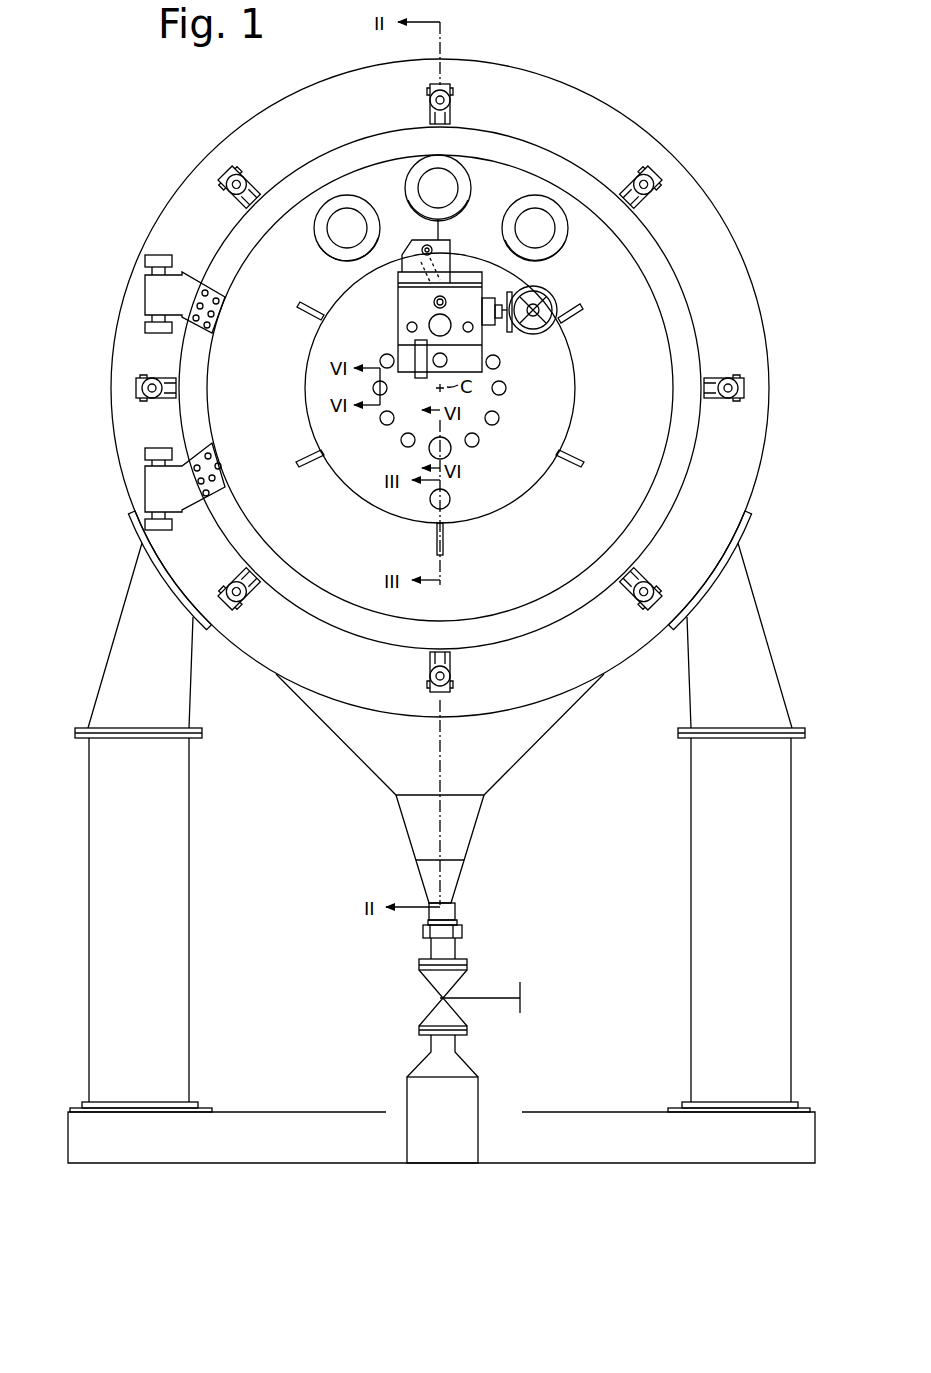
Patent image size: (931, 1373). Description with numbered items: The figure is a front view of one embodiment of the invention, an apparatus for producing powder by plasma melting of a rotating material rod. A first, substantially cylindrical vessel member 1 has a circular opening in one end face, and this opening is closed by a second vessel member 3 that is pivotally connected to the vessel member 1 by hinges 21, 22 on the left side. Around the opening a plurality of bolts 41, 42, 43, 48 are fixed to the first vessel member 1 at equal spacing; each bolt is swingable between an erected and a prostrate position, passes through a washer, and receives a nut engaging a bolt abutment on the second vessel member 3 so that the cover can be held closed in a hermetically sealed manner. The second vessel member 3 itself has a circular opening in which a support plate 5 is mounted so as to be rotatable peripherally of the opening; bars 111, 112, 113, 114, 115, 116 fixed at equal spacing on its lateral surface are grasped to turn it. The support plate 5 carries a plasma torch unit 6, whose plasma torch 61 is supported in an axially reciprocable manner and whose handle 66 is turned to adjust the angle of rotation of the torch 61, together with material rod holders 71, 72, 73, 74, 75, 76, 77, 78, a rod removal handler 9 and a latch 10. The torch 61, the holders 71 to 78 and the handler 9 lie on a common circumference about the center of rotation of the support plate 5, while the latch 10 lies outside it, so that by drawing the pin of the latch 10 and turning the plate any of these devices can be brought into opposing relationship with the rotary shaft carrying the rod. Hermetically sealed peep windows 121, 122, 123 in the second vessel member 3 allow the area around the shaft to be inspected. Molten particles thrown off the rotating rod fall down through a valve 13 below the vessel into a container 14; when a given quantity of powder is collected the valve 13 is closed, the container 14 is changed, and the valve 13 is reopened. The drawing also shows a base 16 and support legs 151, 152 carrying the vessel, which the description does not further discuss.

The first vessel member 1 is at (622, 130).
The second vessel member 3 is at (655, 352).
The support plate 5 is at (572, 416).
The plasma torch unit 6 is at (459, 277).
The rod removal handler 9 is at (455, 452).
The latch 10 is at (455, 502).
The valve 13 is at (474, 963).
The container 14 is at (480, 1093).
The base 16 is at (240, 1110).
The hinge 21 is at (196, 275).
The hinge 22 is at (183, 458).
The bolt 41 is at (730, 395).
The bolt 42 is at (652, 582).
The bolt 43 is at (450, 100).
The bolt 48 is at (650, 180).
The plasma torch 61 is at (452, 323).
The handle 66 is at (553, 297).
The material rod holder 71 is at (501, 362).
The material rod holder 72 is at (507, 388).
The material rod holder 73 is at (500, 418).
The material rod holder 74 is at (480, 440).
The material rod holder 75 is at (400, 441).
The material rod holder 76 is at (380, 420).
The material rod holder 77 is at (373, 388).
The material rod holder 78 is at (383, 355).
The bar 111 is at (580, 466).
The bar 112 is at (445, 540).
The bar 113 is at (300, 460).
The bar 114 is at (302, 316).
The bar 115 is at (430, 243).
The bar 116 is at (578, 314).
The peep window 121 is at (340, 235).
The peep window 122 is at (448, 190).
The peep window 123 is at (540, 230).
The leg 151 is at (106, 662).
The leg 152 is at (780, 688).